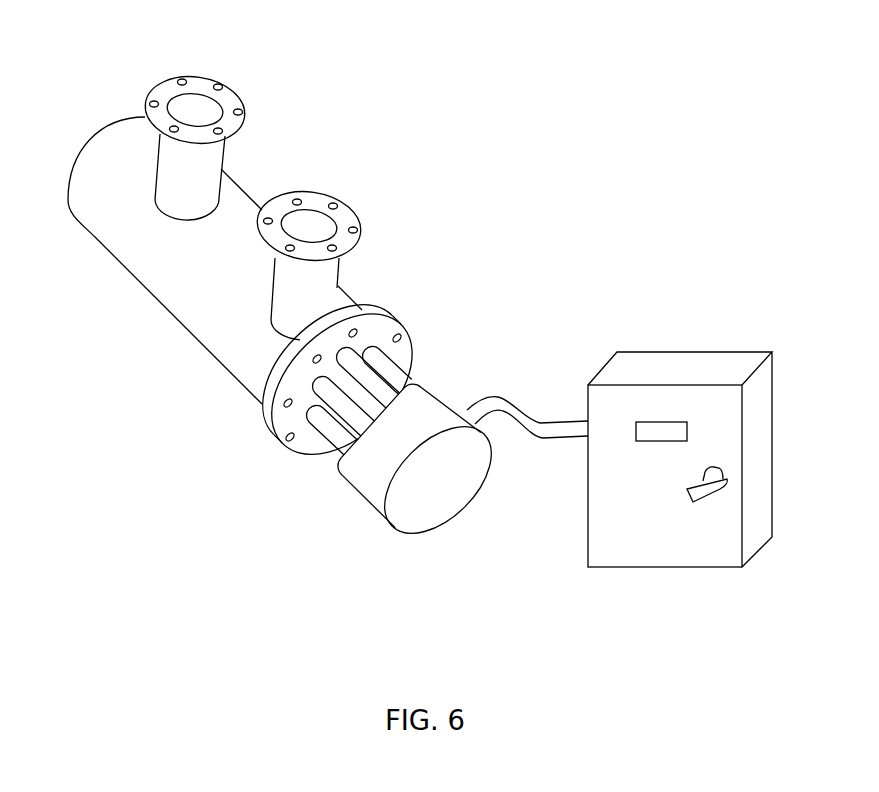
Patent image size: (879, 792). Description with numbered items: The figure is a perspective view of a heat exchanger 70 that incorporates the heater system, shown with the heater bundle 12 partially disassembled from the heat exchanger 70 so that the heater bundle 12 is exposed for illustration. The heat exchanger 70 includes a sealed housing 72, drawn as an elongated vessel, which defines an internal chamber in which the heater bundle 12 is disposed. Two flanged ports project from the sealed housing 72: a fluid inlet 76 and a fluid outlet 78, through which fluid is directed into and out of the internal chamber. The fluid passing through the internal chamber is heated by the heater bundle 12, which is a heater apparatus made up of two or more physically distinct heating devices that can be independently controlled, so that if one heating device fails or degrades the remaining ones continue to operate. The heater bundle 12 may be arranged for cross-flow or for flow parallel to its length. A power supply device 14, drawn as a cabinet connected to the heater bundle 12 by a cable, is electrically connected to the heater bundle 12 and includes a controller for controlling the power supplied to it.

The heat exchanger 70 is at (384, 68).
The sealed housing 72 is at (96, 128).
The fluid inlet 76 is at (235, 80).
The fluid outlet 78 is at (344, 193).
The heater bundle 12 is at (301, 426).
The power supply device 14 is at (755, 330).